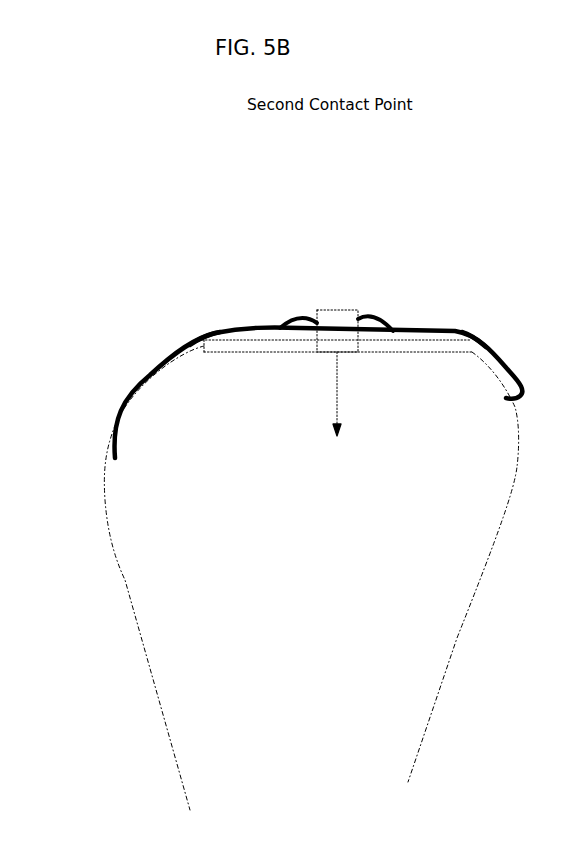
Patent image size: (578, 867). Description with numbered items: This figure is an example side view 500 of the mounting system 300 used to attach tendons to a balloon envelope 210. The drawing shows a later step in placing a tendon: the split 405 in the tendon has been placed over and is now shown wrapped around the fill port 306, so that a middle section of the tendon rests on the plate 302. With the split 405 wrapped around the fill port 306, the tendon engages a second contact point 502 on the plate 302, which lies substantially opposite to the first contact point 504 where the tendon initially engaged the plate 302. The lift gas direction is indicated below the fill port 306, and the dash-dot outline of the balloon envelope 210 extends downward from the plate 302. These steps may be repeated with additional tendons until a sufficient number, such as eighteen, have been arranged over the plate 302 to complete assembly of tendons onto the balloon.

The side view 500 is at (538, 57).
The balloon envelope 210 is at (125, 580).
The mounting system 300 is at (471, 170).
The plate 302 is at (418, 352).
The fill port 306 is at (358, 312).
The split 405 is at (290, 322).
The second contact point 502 is at (199, 332).
The first contact point 504 is at (477, 340).